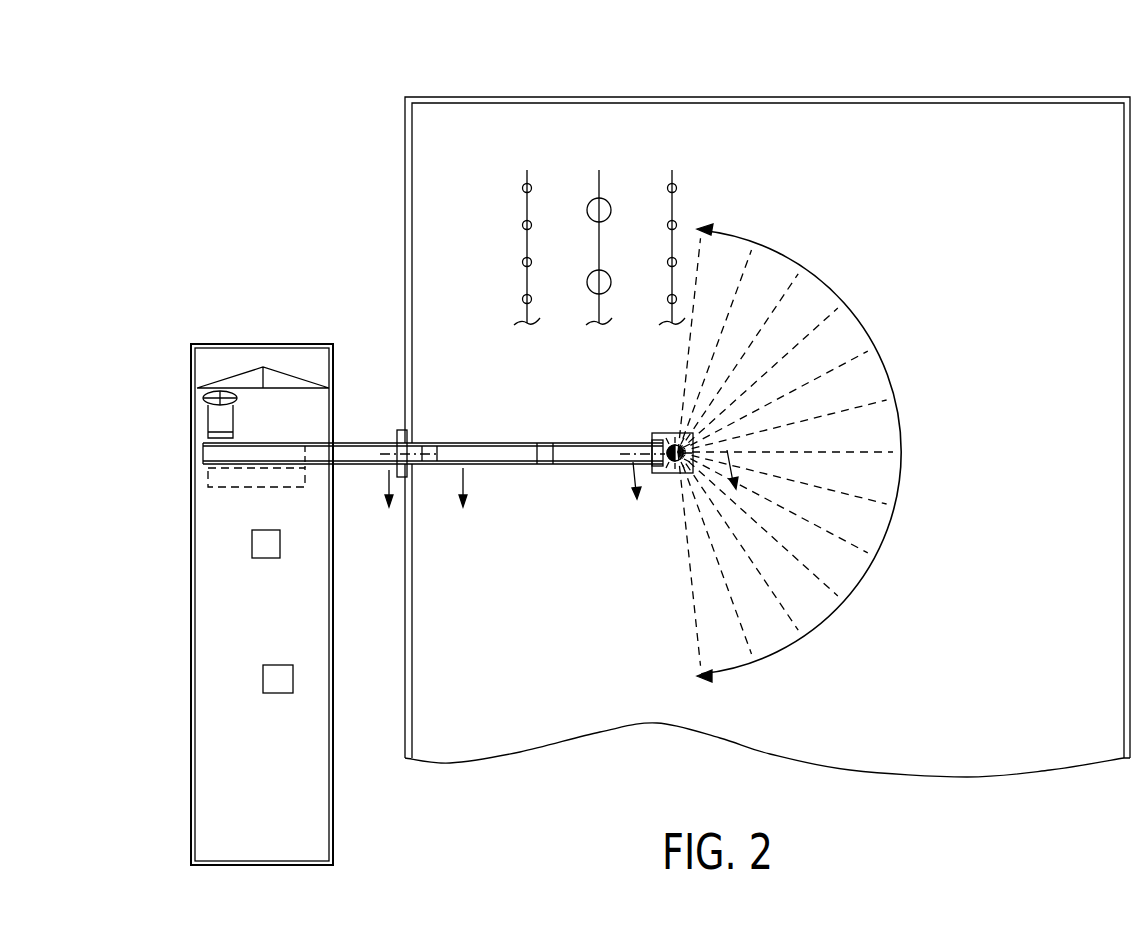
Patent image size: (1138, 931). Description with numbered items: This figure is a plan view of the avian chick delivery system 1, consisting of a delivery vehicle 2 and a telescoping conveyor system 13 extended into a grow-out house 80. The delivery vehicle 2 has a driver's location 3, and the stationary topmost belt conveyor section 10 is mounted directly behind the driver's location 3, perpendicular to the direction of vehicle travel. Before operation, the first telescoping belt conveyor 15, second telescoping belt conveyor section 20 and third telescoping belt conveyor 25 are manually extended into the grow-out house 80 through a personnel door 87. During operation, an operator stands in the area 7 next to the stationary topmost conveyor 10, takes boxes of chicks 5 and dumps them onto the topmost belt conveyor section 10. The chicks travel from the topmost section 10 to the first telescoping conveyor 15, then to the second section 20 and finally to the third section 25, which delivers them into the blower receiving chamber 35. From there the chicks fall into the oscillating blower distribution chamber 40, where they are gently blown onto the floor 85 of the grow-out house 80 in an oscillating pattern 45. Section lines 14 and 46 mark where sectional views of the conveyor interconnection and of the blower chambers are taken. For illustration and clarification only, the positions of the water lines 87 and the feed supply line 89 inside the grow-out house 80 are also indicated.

The avian chick delivery system 1 is at (205, 363).
The delivery vehicle 2 is at (232, 344).
The driver's location 3 is at (220, 420).
The boxes of chicks 5 is at (262, 677).
The area 7 is at (238, 483).
The stationary topmost belt conveyor section 10 is at (252, 453).
The telescoping conveyor system 13 is at (350, 443).
The section line 14— 14 is at (425, 507).
The first telescoping belt conveyor 15 is at (367, 455).
The second telescoping belt conveyor section 20 is at (505, 450).
The third telescoping belt conveyor 25 is at (587, 450).
The blower receiving chamber 35 is at (672, 478).
The oscillating blower distribution chamber 40 is at (668, 437).
The oscillating pattern 45 is at (832, 338).
The section line 46— 46 is at (686, 494).
The grow-out house 80 is at (965, 100).
The floor 85 is at (1010, 160).
The water lines 87 is at (527, 210).
The feed supply line 89 is at (599, 180).